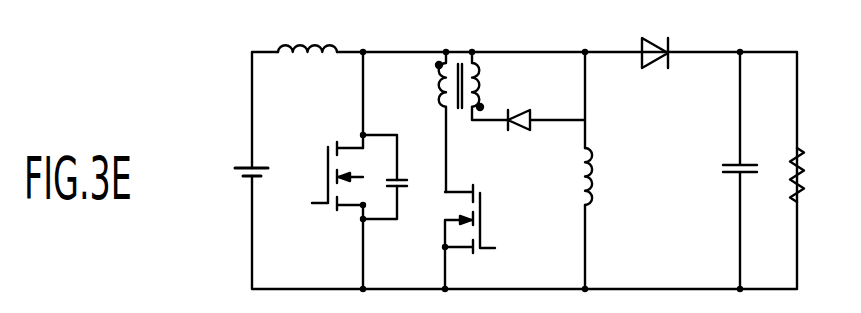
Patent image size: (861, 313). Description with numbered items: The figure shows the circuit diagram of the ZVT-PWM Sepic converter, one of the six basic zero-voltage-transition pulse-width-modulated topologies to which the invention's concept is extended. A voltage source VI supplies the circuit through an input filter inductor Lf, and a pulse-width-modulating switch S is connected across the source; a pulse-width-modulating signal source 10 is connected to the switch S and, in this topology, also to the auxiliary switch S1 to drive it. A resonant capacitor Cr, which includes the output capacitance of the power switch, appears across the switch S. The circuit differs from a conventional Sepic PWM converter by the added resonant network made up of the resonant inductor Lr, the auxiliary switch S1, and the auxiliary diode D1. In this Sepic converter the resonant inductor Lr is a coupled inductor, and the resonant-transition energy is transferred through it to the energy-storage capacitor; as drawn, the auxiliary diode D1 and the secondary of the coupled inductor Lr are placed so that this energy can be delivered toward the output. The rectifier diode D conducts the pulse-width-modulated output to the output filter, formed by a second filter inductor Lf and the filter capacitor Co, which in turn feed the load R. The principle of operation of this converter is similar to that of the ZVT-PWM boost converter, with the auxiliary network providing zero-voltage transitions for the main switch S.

The pulse-width-modulating signal source 10 is at (409, 215).
The pulse-width-modulating switch S is at (323, 182).
The auxiliary switch S1 is at (485, 237).
The filter inductor Lf is at (450, 108).
The resonant inductor Lr is at (472, 122).
The resonant capacitor Cr is at (391, 143).
The auxiliary diode D1 is at (546, 136).
The rectifier diode D is at (656, 42).
The filter capacitor Co is at (747, 170).
The load R is at (806, 175).
The voltage source VI is at (236, 178).